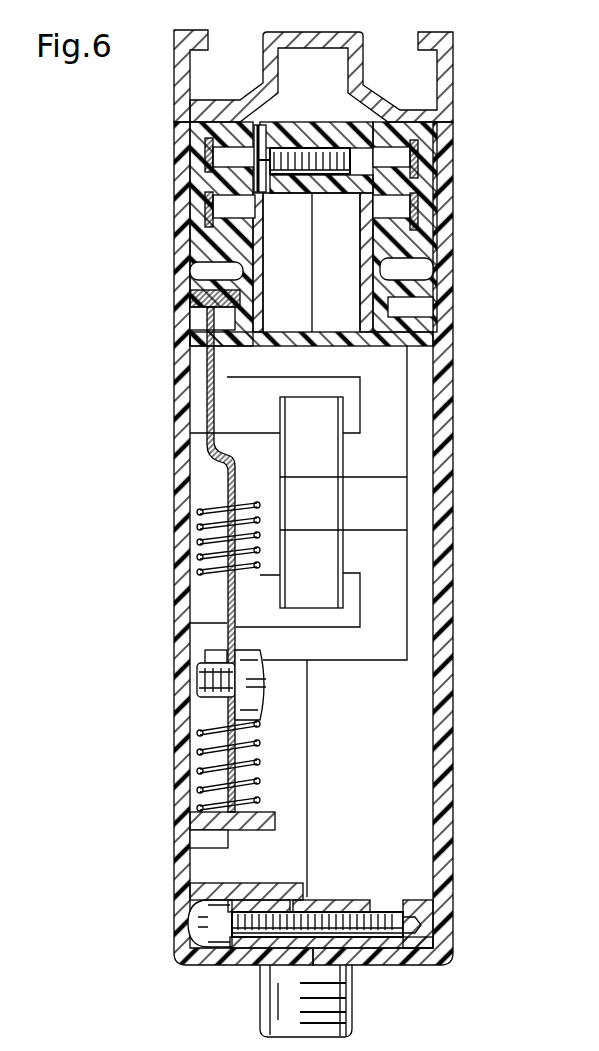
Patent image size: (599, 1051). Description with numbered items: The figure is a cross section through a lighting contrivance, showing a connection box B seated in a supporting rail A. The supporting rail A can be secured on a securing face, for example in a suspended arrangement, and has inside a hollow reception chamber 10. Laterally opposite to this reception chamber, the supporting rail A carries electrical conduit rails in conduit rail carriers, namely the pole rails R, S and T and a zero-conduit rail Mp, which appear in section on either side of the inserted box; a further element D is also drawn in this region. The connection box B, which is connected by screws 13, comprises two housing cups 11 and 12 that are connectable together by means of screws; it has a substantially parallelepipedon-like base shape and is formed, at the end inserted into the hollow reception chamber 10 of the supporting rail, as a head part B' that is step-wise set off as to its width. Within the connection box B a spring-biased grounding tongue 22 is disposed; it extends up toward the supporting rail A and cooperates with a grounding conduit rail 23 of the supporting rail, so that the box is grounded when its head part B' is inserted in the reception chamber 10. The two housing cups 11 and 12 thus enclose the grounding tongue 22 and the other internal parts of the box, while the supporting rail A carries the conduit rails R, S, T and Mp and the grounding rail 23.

The reception chamber 10 is at (333, 57).
The housing cup 11 is at (174, 591).
The housing cup 12 is at (447, 452).
The screw 13 is at (293, 185).
The grounding tongue 22 is at (233, 460).
The grounding conduit rail 23 is at (197, 307).
The supporting rail A is at (174, 82).
The connecting box B is at (286, 261).
The head part B' is at (316, 138).
The pole rail S is at (202, 153).
The seal D is at (202, 186).
The pole rail T is at (213, 240).
The pole rail R is at (447, 142).
The zero-conduit rail Mp is at (425, 210).